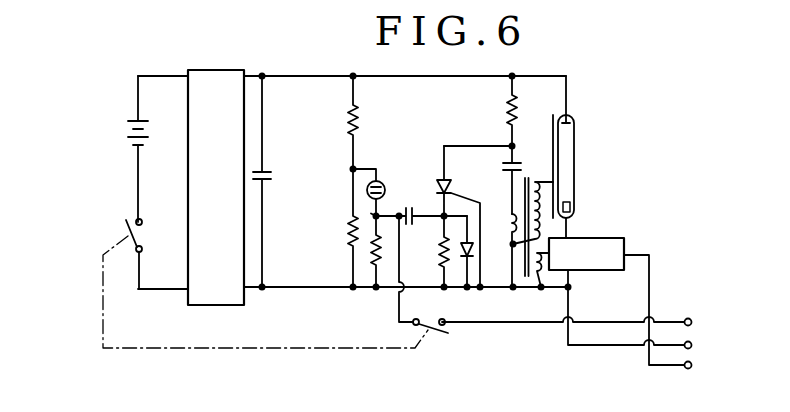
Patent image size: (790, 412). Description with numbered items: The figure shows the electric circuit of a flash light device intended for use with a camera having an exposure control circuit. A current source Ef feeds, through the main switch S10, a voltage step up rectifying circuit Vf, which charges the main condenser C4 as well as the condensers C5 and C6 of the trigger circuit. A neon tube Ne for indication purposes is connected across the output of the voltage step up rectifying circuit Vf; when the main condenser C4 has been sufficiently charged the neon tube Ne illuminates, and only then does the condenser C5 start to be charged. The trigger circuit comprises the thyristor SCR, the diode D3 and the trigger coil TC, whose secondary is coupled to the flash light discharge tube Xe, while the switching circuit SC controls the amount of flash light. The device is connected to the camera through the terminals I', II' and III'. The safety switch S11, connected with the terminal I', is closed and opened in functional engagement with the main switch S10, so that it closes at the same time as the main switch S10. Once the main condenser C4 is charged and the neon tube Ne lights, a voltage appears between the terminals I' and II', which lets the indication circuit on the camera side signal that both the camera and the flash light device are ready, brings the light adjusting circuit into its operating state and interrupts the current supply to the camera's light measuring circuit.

The current source Ef is at (151, 149).
The voltage step up rectifying circuit Vf is at (216, 187).
The main condenser C4 is at (274, 181).
The main switch S10 is at (152, 254).
The neon tube Ne is at (366, 189).
The condenser for the trigger circuit C5 is at (421, 200).
The thyristor SCR is at (452, 187).
The diode D3 is at (474, 255).
The trigger coil TC is at (520, 232).
The condenser for the trigger circuit C6 is at (524, 180).
The flash light discharge tube Xe is at (575, 161).
The switching circuit SC is at (586, 262).
The safety switch S11 is at (428, 274).
The terminal I' is at (578, 319).
The terminal II' is at (646, 322).
The terminal III' is at (679, 319).